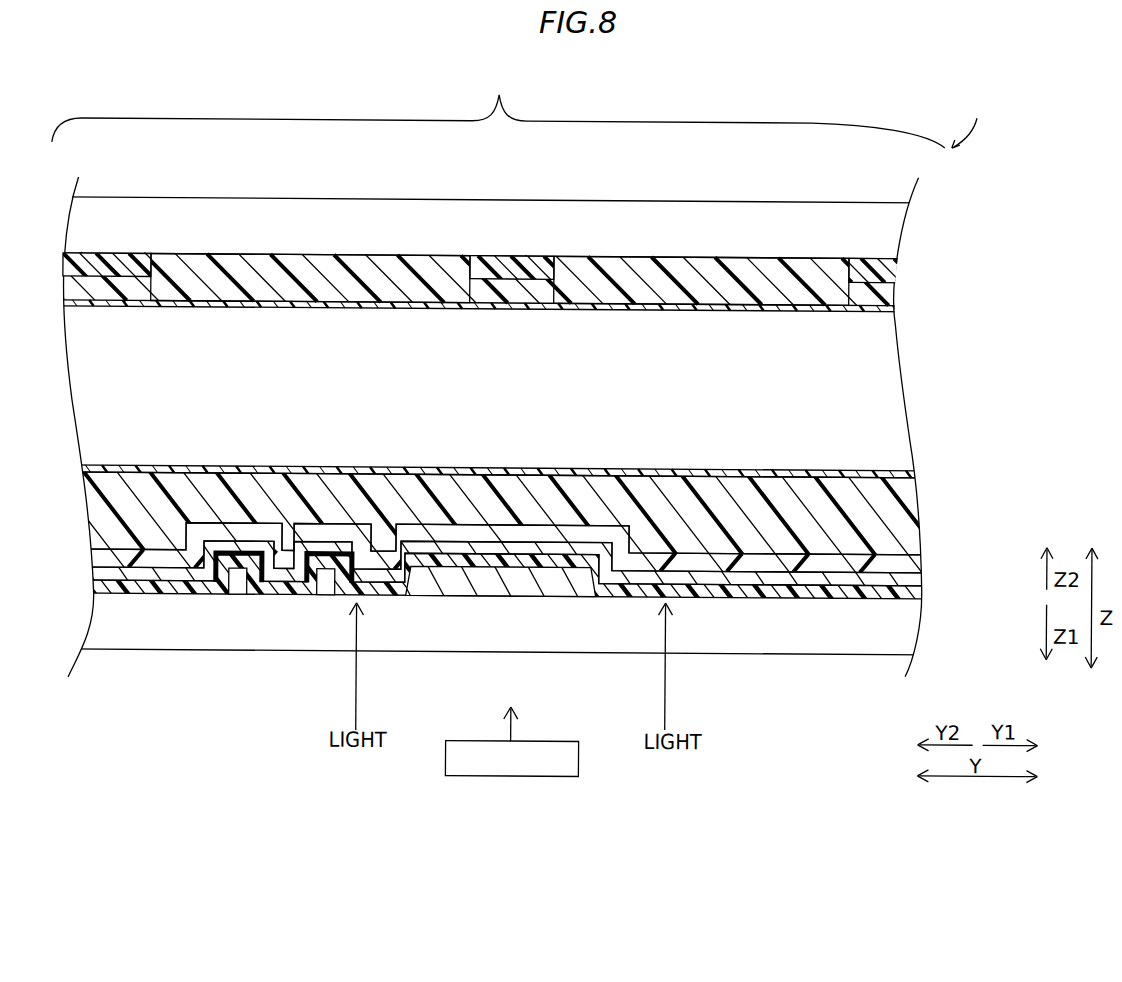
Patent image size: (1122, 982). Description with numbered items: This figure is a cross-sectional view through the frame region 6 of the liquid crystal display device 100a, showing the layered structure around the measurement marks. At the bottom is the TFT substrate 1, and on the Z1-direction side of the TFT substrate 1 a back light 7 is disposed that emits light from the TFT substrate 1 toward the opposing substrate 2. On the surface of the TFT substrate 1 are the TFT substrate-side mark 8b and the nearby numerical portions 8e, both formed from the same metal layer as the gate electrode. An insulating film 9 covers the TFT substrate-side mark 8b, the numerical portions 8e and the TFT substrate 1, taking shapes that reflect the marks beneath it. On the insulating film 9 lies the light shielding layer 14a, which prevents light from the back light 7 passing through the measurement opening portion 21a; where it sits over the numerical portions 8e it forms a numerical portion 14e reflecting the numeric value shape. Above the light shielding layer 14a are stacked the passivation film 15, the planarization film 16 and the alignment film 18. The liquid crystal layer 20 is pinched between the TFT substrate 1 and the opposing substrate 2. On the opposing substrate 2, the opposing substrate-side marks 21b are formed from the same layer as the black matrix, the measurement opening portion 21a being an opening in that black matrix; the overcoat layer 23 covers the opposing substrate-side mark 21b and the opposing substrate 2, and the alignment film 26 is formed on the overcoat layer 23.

The TFT substrate 1 is at (905, 622).
The opposing substrate 2 is at (870, 229).
The frame region 6 is at (499, 104).
The back light 7 is at (582, 752).
The TFT substrate-side mark 8b is at (583, 585).
The numerical portion 8e is at (240, 577).
The insulating film 9 is at (910, 585).
The light shielding layer 14a is at (910, 568).
The numerical portion 14e is at (238, 565).
The passivation film 15 is at (910, 552).
The planarization film 16 is at (905, 498).
The alignment film 18 is at (905, 470).
The liquid crystal layer 20 is at (885, 402).
The measurement opening portion 21a is at (265, 267).
The opposing substrate-side mark 21b is at (123, 271).
The overcoat layer 23 is at (880, 282).
The alignment film 26 is at (880, 301).
The liquid crystal display device 100a is at (982, 121).